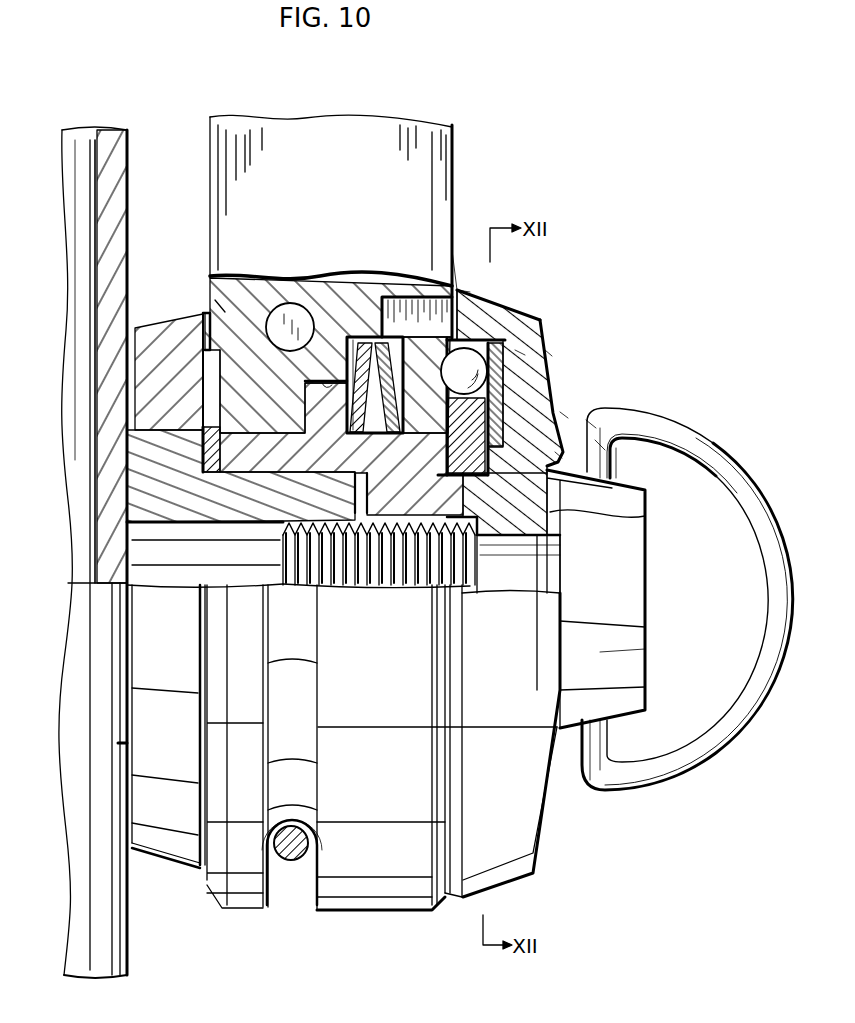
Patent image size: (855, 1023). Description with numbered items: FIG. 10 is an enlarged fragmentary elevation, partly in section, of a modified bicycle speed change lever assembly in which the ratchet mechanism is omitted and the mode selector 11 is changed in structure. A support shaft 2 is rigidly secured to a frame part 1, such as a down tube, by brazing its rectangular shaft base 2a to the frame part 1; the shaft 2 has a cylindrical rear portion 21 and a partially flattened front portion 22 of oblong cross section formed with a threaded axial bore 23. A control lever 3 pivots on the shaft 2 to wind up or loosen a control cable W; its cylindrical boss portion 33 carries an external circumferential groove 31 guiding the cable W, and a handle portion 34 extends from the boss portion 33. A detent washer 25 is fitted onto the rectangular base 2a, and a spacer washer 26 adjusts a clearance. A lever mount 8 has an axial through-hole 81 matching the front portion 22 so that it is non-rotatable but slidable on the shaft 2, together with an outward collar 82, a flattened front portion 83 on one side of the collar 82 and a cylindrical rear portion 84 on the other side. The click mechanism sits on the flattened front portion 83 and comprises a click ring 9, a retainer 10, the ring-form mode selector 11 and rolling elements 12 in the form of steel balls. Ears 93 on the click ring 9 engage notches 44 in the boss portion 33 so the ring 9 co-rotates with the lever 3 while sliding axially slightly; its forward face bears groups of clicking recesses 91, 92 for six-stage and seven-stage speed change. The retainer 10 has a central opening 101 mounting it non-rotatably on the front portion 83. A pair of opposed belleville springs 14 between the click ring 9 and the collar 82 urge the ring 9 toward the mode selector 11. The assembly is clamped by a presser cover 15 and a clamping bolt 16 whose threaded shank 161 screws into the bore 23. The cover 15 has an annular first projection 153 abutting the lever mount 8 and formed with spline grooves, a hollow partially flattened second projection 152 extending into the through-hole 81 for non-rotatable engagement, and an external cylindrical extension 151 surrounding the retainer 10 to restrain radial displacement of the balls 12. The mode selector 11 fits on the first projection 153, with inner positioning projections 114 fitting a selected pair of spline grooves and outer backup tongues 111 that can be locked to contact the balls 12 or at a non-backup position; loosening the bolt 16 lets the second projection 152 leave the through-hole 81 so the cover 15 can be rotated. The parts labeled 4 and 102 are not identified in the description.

The frame part 1 is at (130, 217).
The support shaft 2 is at (156, 420).
The rectangular shaft base 2a is at (153, 455).
The control lever 3 is at (207, 130).
The retaining member 4 is at (326, 376).
The lever mount 8 is at (421, 494).
The click ring 9 is at (476, 346).
The retainer 10 is at (553, 385).
The mode selector 11 is at (505, 390).
The rolling elements 12 is at (495, 338).
The belleville springs 14 is at (412, 338).
The presser cover 15 is at (648, 518).
The clamping bolt 16 is at (647, 600).
The cylindrical rear portion 21 is at (245, 330).
The partially flattened front portion 22 is at (296, 302).
The threaded axial bore 23 is at (300, 541).
The detent washer 25 is at (168, 345).
The spacer washer 26 is at (195, 325).
The circumferential groove 31 is at (315, 872).
The cylindrical boss portion 33 is at (384, 913).
The handle portion 34 is at (455, 150).
The notches 44 is at (422, 295).
The axial through-hole 81 is at (617, 468).
The outward collar 82 is at (365, 340).
The flattened front portion 83 is at (565, 415).
The cylindrical rear portion 84 is at (248, 318).
The clicking recesses 91 is at (505, 327).
The clicking recesses 92 is at (498, 305).
The ears 93 is at (455, 250).
The central opening 101 is at (590, 425).
The housing surface 102 is at (548, 352).
The backup portions 111 is at (520, 352).
The positioning projections 114 is at (560, 455).
The cylindrical extension 151 is at (470, 292).
The second projection 152 is at (600, 651).
The annular first projection 153 is at (600, 445).
The threaded shank 161 is at (268, 570).
The control cable W is at (287, 858).